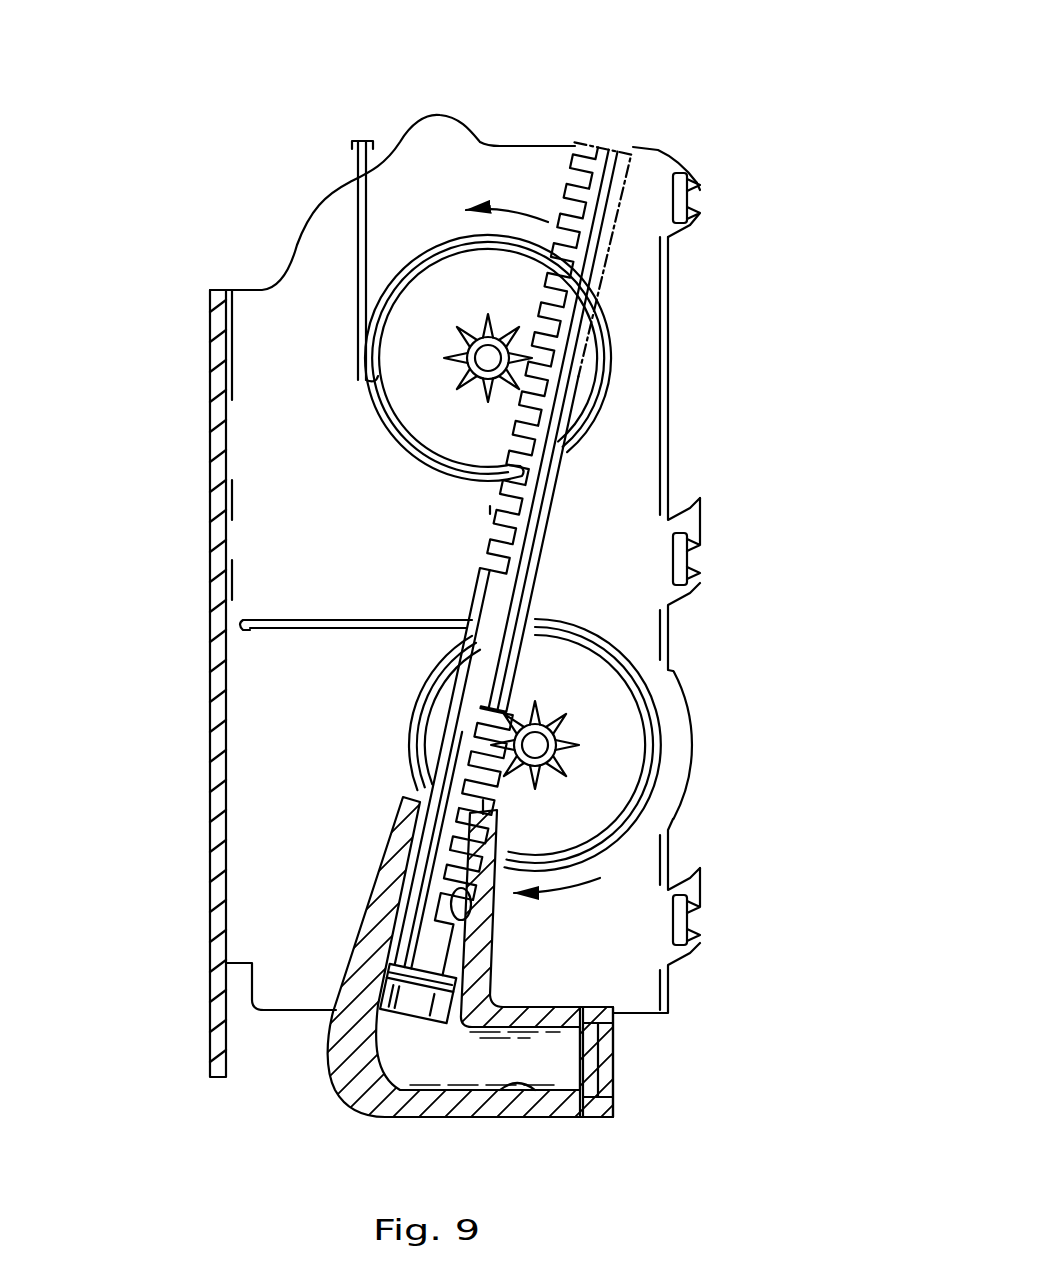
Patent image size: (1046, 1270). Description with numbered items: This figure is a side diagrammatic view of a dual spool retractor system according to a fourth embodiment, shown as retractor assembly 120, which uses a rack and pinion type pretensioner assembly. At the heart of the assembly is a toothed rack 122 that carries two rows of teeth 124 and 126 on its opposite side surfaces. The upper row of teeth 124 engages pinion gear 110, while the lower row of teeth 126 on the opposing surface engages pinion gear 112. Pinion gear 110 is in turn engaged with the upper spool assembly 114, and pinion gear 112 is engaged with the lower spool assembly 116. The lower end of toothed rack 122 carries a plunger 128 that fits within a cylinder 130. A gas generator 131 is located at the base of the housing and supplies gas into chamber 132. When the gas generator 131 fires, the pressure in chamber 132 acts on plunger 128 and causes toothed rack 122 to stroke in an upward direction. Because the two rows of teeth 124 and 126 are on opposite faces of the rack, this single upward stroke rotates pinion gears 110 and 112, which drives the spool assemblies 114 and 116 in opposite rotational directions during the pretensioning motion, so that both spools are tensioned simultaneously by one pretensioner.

The pinion gear 110 is at (488, 313).
The pinion gear 112 is at (562, 733).
The upper spool assembly 114 is at (605, 371).
The lower spool assembly 116 is at (604, 785).
The retractor assembly 120 is at (731, 93).
The toothed rack 122 is at (548, 542).
The teeth 124 is at (490, 510).
The teeth 126 is at (484, 807).
The plunger 128 is at (387, 973).
The cylinder 130 is at (470, 906).
The gas generator 131 is at (600, 1058).
The chamber 132 is at (518, 1083).